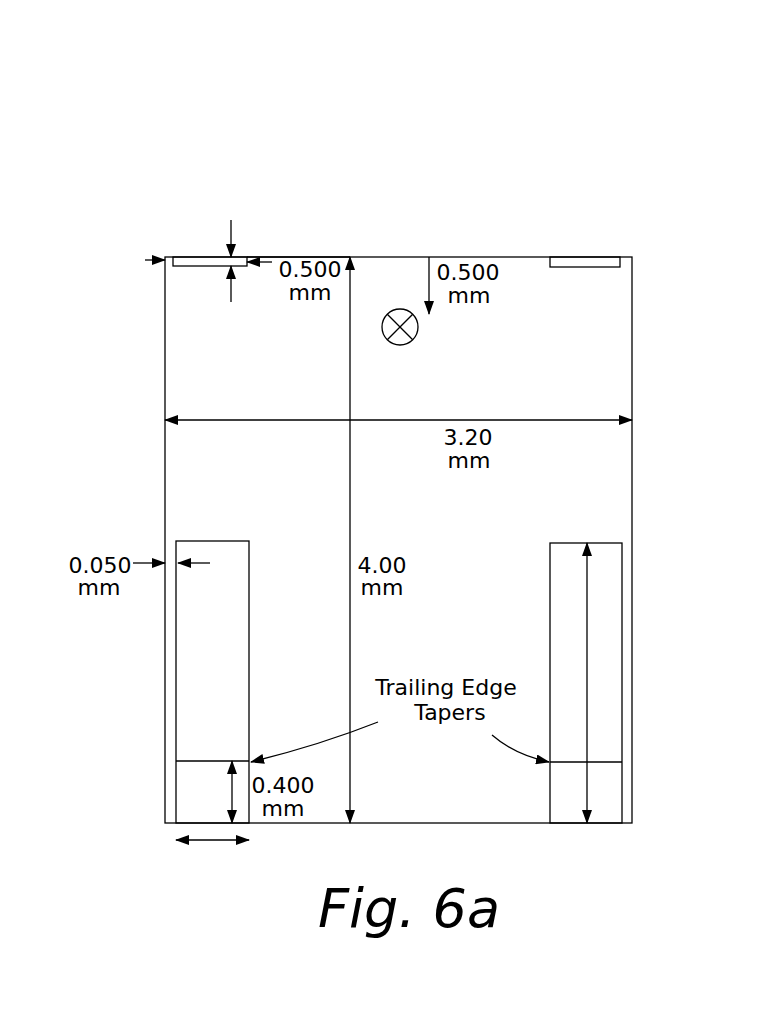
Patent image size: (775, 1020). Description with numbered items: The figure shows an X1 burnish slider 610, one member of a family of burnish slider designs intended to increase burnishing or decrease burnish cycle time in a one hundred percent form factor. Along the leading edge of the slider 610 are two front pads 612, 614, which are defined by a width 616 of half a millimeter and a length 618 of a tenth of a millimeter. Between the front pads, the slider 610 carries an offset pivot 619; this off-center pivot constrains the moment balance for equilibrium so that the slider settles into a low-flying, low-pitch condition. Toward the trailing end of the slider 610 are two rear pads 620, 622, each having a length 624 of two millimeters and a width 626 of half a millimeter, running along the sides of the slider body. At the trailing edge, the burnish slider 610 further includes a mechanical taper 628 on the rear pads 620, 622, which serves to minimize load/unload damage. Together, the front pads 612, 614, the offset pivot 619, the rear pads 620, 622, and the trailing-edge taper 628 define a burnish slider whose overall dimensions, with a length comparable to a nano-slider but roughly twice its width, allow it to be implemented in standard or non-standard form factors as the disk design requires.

The X1 burnish slider 610 is at (337, 180).
The front pad 612 is at (192, 253).
The front pad 614 is at (585, 253).
The width of front pads 616 is at (290, 307).
The length of front pads 618 is at (222, 163).
The offset pivot 619 is at (400, 309).
The rear pad 620 is at (225, 540).
The rear pad 622 is at (555, 540).
The length of rear pads 624 is at (585, 655).
The width of rear pads 626 is at (210, 838).
The mechanical taper 628 is at (183, 792).